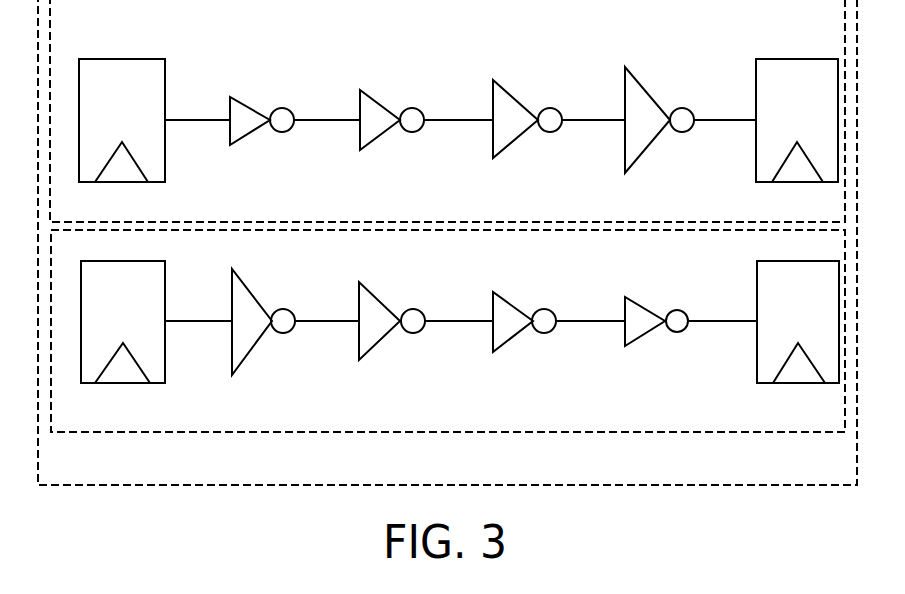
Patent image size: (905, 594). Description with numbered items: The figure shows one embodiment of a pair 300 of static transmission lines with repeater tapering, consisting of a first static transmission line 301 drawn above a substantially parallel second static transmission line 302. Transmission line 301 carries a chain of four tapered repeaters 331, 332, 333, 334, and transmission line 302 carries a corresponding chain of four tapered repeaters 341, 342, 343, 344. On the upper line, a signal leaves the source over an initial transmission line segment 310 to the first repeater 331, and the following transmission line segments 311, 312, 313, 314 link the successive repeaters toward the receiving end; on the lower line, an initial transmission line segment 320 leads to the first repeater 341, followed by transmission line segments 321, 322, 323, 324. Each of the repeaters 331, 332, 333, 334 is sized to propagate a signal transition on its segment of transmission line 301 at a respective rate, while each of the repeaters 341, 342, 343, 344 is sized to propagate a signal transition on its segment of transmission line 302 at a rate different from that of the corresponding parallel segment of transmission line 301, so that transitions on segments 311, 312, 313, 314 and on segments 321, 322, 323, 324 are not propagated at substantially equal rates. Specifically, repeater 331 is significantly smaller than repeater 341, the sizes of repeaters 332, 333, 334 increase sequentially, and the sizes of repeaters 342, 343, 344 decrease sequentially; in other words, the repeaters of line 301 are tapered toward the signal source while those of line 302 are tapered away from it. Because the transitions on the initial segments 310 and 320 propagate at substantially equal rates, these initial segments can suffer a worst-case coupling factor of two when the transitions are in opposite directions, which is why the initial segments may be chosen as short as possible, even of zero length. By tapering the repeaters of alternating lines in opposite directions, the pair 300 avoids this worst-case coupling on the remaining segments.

The pair of static transmission lines 300 is at (115, 477).
The static transmission line 301 is at (115, 36).
The static transmission line 302 is at (829, 427).
The initial transmission line segment 310 is at (202, 76).
The transmission line segment 311 is at (327, 76).
The transmission line segment 312 is at (457, 76).
The transmission line segment 313 is at (589, 76).
The transmission line segment 314 is at (725, 76).
The initial transmission line segment 320 is at (198, 278).
The transmission line segment 321 is at (327, 278).
The transmission line segment 322 is at (459, 278).
The transmission line segment 323 is at (590, 278).
The transmission line segment 324 is at (722, 278).
The repeater 331 is at (262, 159).
The repeater 332 is at (392, 155).
The repeater 333 is at (527, 150).
The repeater 334 is at (659, 144).
The repeater 341 is at (263, 346).
The repeater 342 is at (392, 352).
The repeater 343 is at (524, 357).
The repeater 344 is at (658, 360).